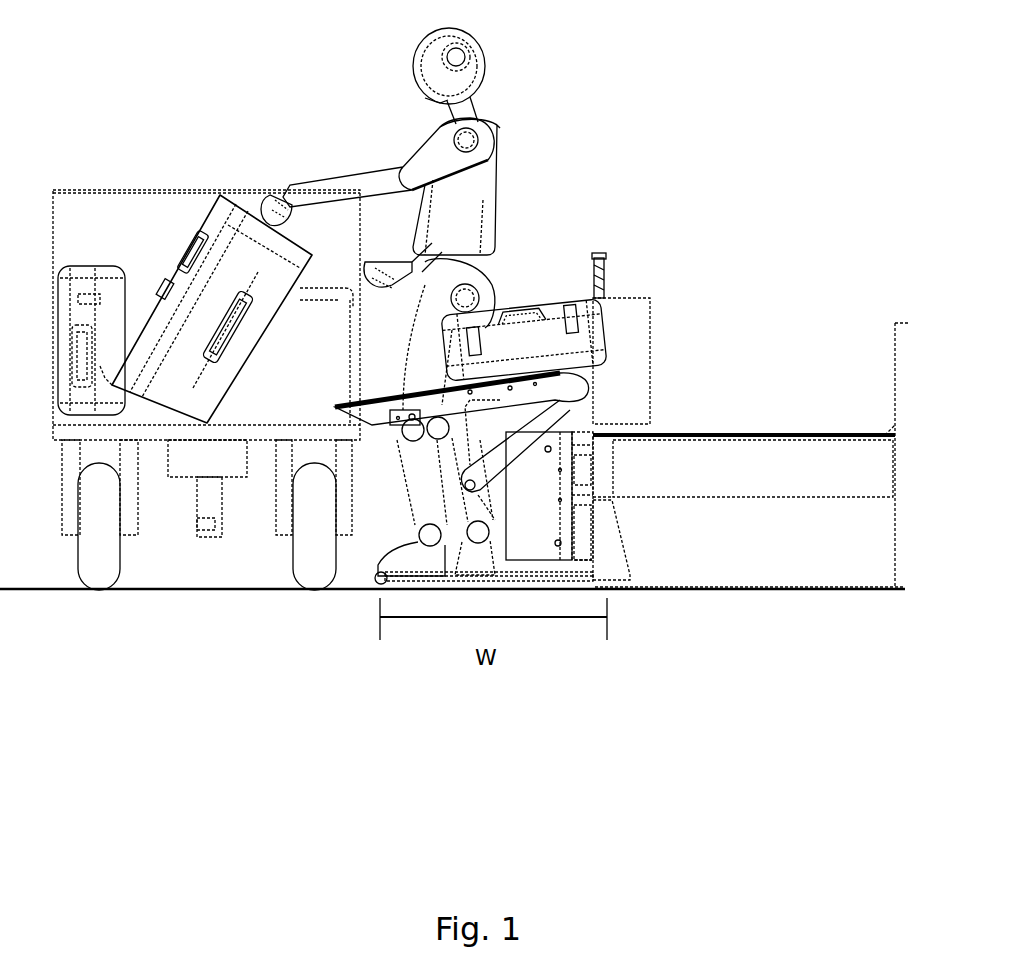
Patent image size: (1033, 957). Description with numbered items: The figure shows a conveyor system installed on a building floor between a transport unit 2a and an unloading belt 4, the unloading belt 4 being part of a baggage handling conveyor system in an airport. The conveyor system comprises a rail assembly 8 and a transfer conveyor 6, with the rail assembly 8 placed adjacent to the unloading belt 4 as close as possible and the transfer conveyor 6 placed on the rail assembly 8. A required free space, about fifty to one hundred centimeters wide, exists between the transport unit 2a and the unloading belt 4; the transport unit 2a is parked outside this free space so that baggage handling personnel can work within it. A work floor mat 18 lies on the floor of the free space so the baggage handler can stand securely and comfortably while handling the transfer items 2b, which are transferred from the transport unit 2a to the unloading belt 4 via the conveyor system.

The transport unit 2a is at (203, 427).
The transfer items 2b is at (217, 207).
The unloading belt 4 is at (728, 437).
The transfer conveyor 6 is at (525, 378).
The rail assembly 8 is at (607, 553).
The work floor mat 18 is at (423, 578).